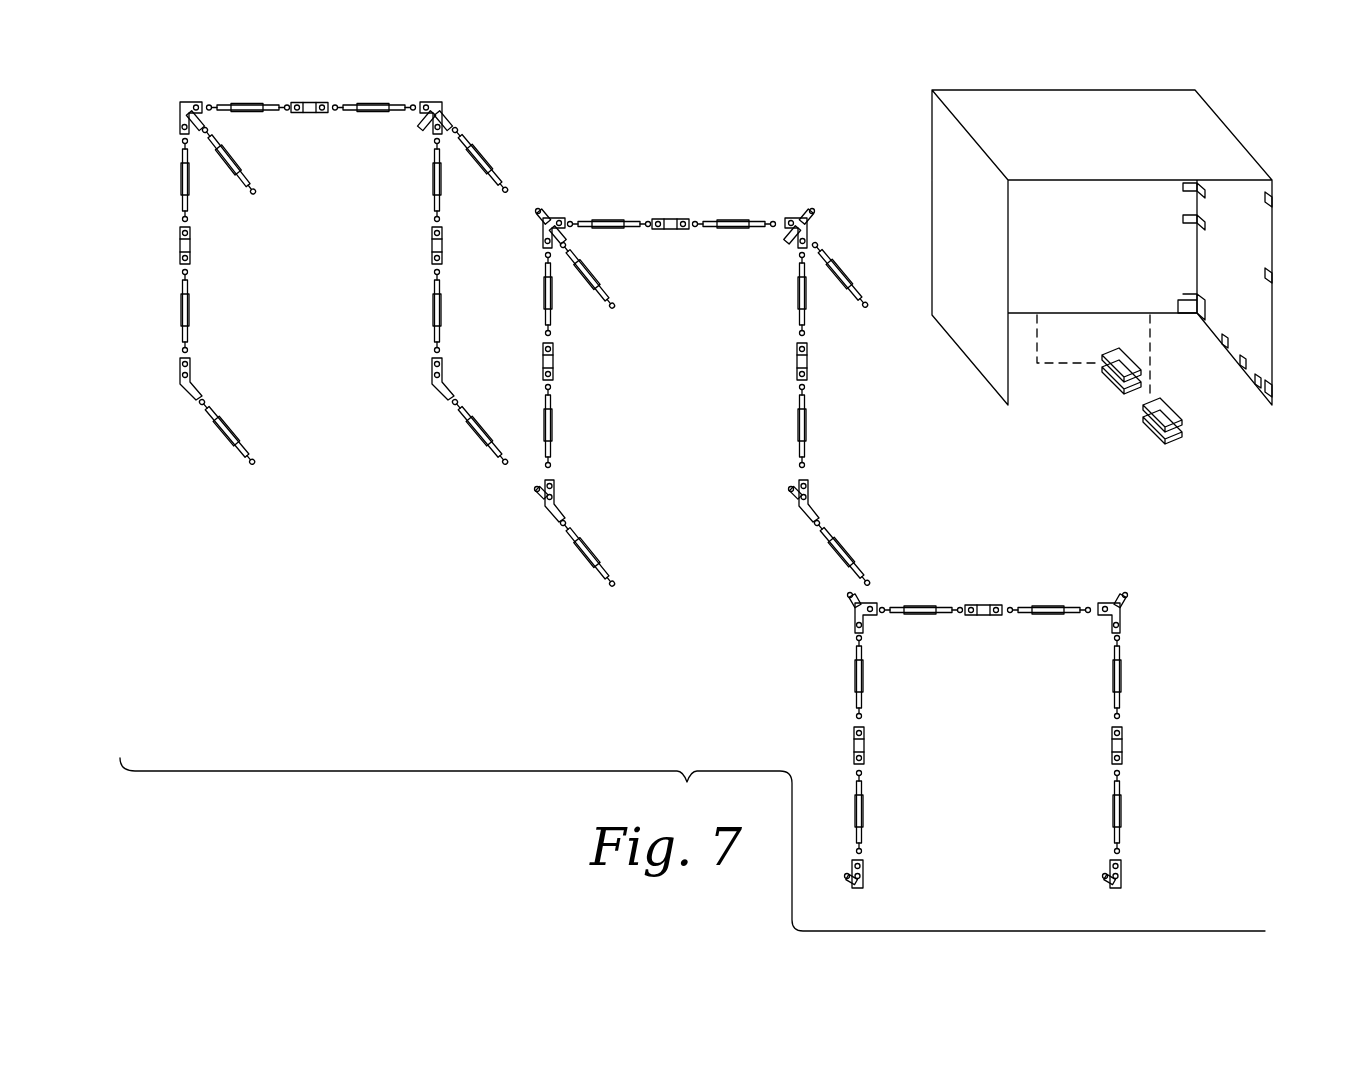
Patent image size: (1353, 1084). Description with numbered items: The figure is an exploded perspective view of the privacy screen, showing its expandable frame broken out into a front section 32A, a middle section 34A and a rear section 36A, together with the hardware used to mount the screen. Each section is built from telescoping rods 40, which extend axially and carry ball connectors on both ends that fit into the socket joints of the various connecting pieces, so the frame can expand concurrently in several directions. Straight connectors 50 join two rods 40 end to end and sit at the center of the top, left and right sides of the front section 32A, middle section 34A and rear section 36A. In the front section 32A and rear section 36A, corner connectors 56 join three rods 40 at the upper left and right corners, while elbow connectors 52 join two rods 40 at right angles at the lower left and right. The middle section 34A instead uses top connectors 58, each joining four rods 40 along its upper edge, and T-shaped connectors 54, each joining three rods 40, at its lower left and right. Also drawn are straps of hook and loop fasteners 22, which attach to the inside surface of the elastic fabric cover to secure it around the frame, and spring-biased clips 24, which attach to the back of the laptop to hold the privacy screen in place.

The hook and loop fasteners 22 is at (1183, 188).
The spring-biased clips 24 is at (1152, 423).
The front section 32A is at (977, 828).
The middle section 34A is at (699, 505).
The rear section 36A is at (333, 437).
The telescoping rods 40 is at (490, 153).
The straight connector 50 is at (302, 103).
The elbow connector 52 is at (180, 383).
The T-shaped connector 54 is at (800, 498).
The corner connector 56 is at (185, 103).
The top connector 58 is at (553, 216).